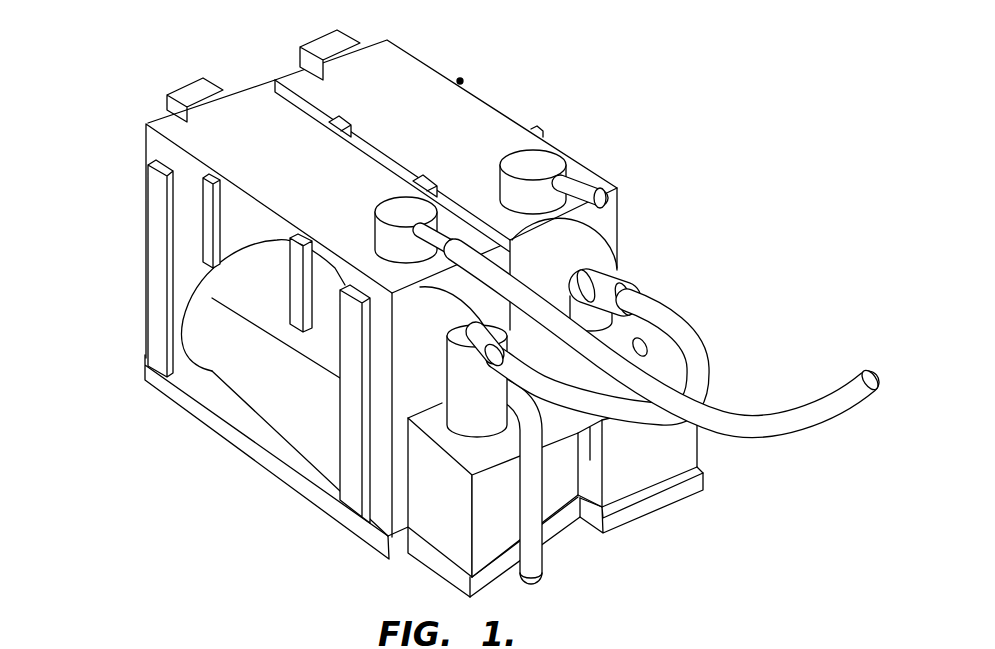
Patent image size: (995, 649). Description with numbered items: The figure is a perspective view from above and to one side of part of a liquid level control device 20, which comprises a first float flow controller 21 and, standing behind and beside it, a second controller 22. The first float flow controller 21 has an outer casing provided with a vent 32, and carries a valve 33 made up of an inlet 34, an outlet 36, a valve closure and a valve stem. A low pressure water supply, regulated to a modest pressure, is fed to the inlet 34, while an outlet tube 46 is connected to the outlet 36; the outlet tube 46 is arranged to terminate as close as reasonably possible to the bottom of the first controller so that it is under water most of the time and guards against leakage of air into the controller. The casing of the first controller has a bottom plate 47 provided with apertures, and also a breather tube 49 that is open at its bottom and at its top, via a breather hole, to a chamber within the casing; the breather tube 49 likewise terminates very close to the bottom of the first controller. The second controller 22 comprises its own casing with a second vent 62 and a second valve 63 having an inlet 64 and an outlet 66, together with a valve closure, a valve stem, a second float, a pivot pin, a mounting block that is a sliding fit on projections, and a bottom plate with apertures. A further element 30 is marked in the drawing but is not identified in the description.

The liquid level control device 20 is at (118, 197).
The first float flow controller 21 is at (170, 125).
The second controller 22 is at (387, 60).
The compressor unit 30 is at (190, 645).
The vent 32 is at (380, 230).
The valve 33 is at (462, 372).
The inlet 34 is at (466, 334).
The outlet 36 is at (466, 447).
The outlet tube 46 is at (537, 566).
The bottom plate 47 is at (153, 373).
The breather tube 49 is at (193, 90).
The second vent 62 is at (560, 173).
The second valve 63 is at (620, 270).
The inlet 64 is at (633, 288).
The outlet 66 is at (677, 327).